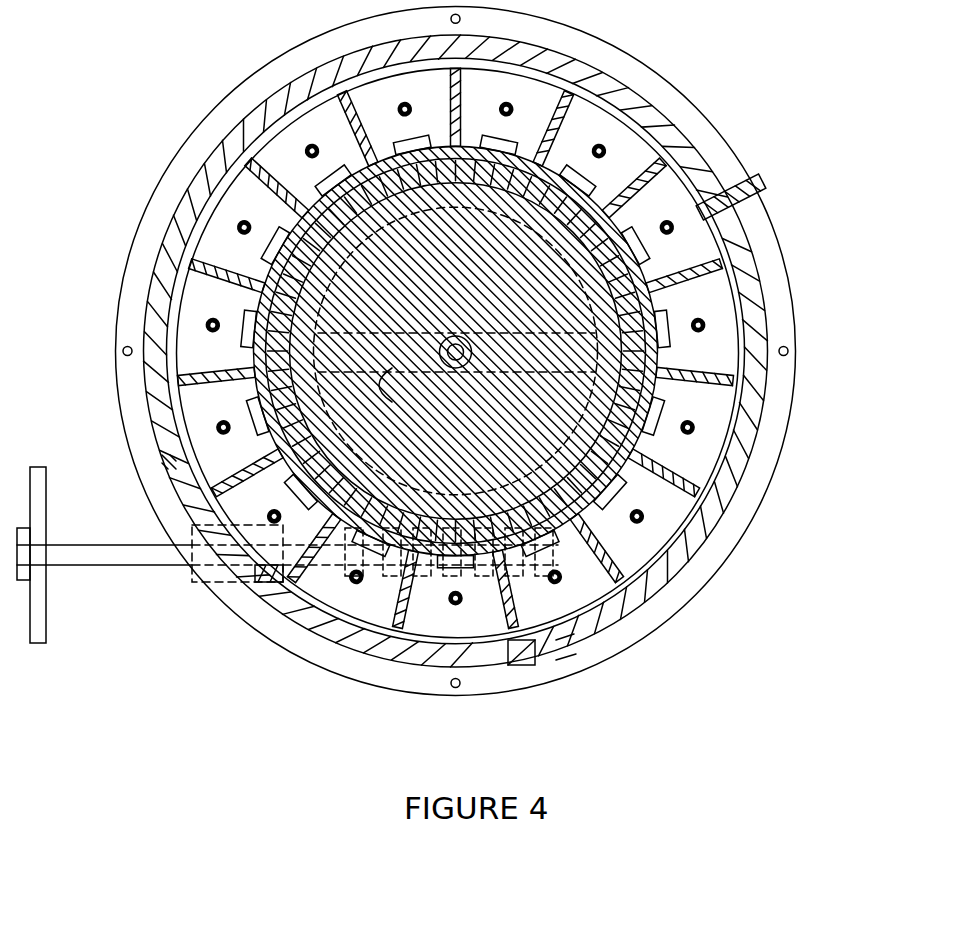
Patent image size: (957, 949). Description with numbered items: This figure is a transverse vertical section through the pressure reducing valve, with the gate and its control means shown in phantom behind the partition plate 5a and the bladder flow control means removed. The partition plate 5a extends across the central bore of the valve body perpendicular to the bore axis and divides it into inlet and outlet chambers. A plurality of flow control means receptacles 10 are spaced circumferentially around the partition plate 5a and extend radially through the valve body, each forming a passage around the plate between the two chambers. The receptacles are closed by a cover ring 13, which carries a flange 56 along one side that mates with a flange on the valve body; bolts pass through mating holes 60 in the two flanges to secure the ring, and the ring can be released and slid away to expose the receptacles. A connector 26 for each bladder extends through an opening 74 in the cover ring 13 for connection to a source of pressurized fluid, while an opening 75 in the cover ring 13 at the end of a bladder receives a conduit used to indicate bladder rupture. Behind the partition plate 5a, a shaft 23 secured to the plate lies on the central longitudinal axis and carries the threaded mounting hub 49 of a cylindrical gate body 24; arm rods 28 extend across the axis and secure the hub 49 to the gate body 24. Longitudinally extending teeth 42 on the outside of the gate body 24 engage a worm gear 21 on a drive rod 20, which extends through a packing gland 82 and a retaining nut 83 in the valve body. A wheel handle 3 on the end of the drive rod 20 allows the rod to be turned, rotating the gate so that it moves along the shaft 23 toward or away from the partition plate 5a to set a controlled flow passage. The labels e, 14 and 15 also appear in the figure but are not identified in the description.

The flange 56 is at (312, 57).
The air gap e is at (277, 127).
The connector 26 is at (710, 208).
The cylindrical gate body 24 is at (548, 248).
The longitudinally extending teeth 42 is at (292, 340).
The shaft 23 is at (456, 351).
The partition plate 5a is at (500, 490).
The threaded mounting hub 49 is at (458, 340).
The arm rod 28 is at (410, 395).
The flow control means receptacle 10 is at (212, 272).
The opening 74 is at (172, 462).
The wheel handle 3 is at (45, 517).
The drive rod 20 is at (88, 556).
The retaining nut 83 is at (218, 583).
The packing gland 82 is at (265, 590).
The worm gear 21 is at (353, 572).
The mating holes 60 is at (457, 688).
The opening 75 is at (556, 652).
The cover ring 13 is at (622, 633).
The pole bolt 14 is at (642, 523).
The pole shoe 15 is at (627, 490).